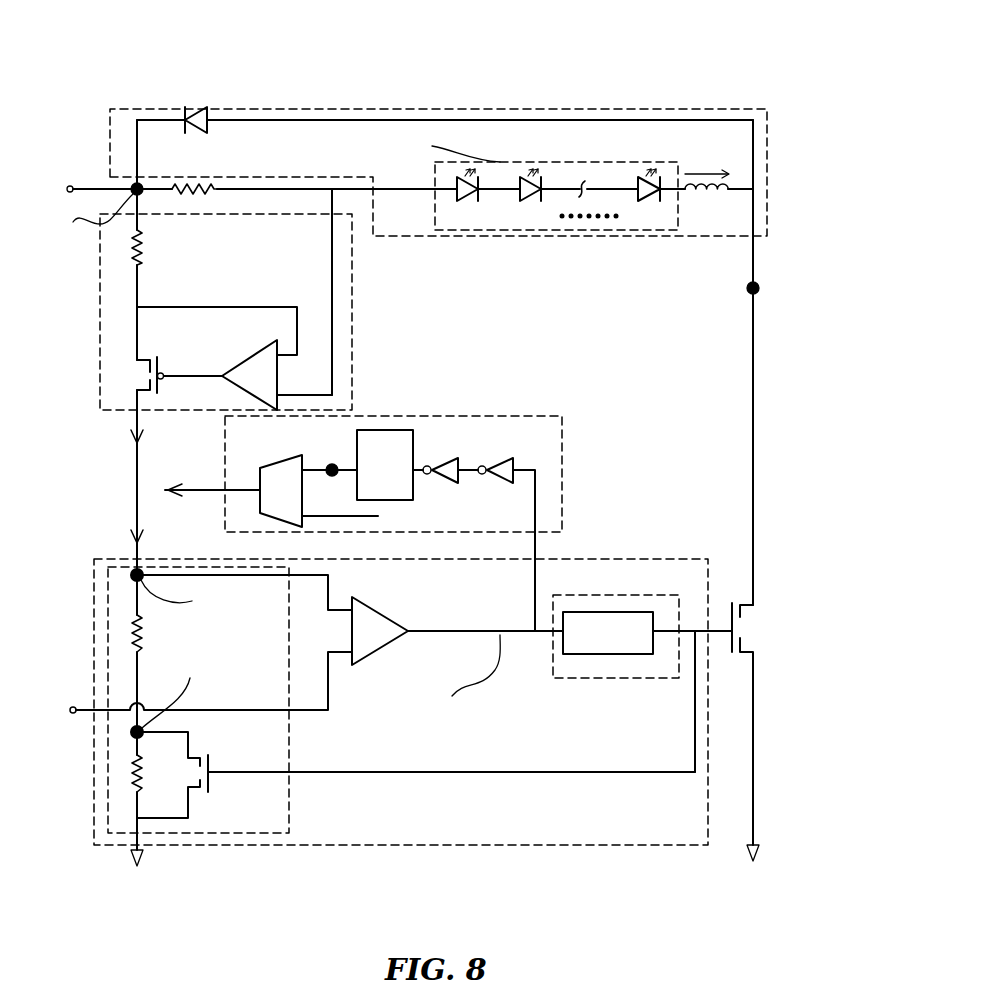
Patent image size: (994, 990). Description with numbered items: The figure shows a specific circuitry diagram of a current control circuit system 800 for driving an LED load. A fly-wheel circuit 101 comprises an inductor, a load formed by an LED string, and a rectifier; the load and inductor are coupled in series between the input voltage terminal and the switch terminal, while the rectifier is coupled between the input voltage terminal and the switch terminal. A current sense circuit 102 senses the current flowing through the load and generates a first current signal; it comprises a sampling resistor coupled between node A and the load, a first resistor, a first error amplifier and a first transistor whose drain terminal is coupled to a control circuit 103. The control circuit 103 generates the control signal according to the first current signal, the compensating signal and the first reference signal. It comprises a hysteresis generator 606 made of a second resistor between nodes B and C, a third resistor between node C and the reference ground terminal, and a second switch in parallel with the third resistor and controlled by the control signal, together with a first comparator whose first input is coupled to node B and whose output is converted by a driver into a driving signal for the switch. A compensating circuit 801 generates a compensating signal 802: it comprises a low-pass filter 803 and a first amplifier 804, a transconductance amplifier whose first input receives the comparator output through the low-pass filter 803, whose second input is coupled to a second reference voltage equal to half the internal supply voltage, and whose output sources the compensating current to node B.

The current control circuit system 800 is at (768, 58).
The fly-wheel circuit 101 is at (110, 109).
The current sense circuit 102 is at (100, 309).
The control circuit 103 is at (440, 845).
The compensating circuit 801 is at (540, 416).
The compensating signal 802 is at (165, 490).
The low-pass filter 803 is at (403, 417).
The first amplifier 804 is at (293, 456).
The hysteresis generator 606 is at (290, 746).